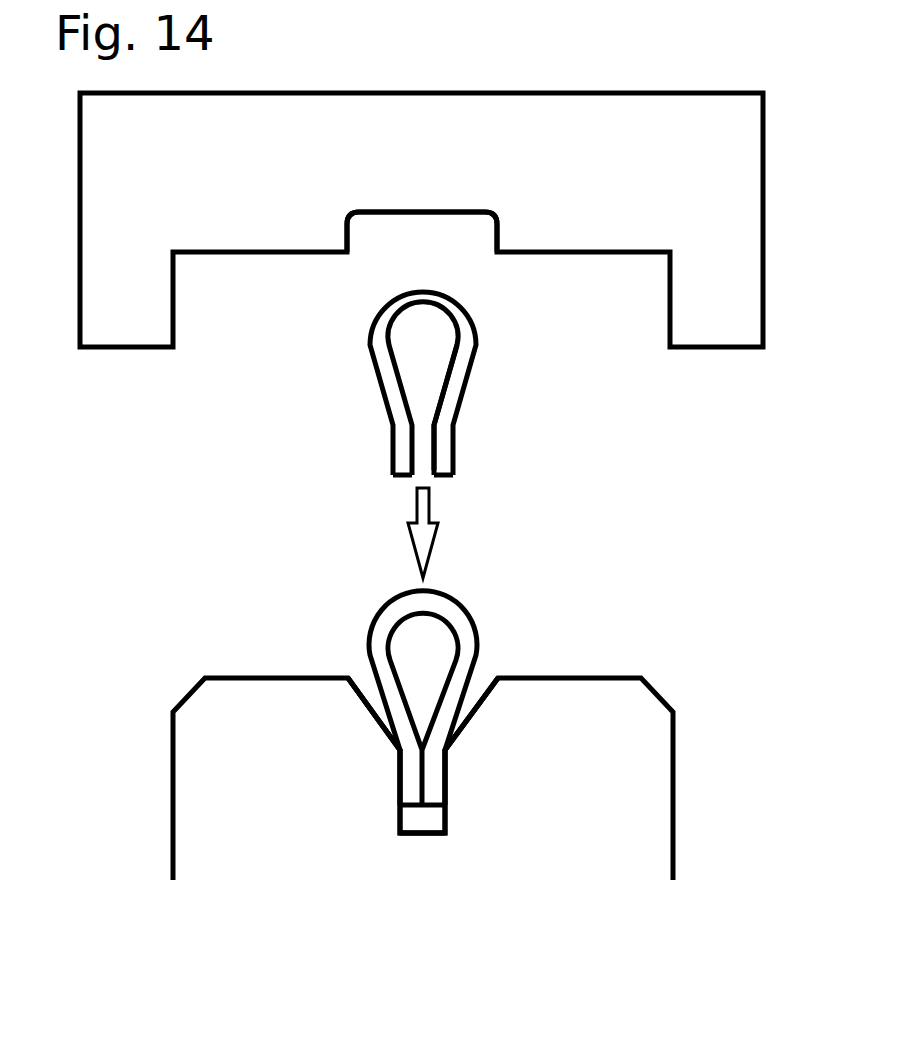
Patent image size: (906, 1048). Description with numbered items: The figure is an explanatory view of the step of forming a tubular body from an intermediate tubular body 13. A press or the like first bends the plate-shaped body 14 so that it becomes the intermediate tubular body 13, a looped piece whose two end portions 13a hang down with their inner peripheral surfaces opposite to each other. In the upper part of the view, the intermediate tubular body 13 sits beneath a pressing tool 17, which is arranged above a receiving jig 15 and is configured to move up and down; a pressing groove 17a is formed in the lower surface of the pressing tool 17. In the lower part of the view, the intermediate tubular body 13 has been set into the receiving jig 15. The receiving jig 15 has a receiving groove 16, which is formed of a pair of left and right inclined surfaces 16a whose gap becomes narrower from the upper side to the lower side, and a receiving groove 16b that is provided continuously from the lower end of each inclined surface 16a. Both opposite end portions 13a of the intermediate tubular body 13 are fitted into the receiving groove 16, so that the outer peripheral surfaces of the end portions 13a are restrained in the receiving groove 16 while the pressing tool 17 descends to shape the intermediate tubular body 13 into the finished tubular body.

The intermediate tubular body 13 is at (335, 360).
The end portions 13a is at (403, 458).
The plate-shaped body 14 is at (458, 377).
The receiving jig 15 is at (247, 637).
The receiving groove 16 is at (353, 755).
The inclined surfaces 16a is at (368, 712).
The receiving groove 16b is at (425, 833).
The pressing tool 17 is at (607, 253).
The pressing groove 17a is at (448, 213).